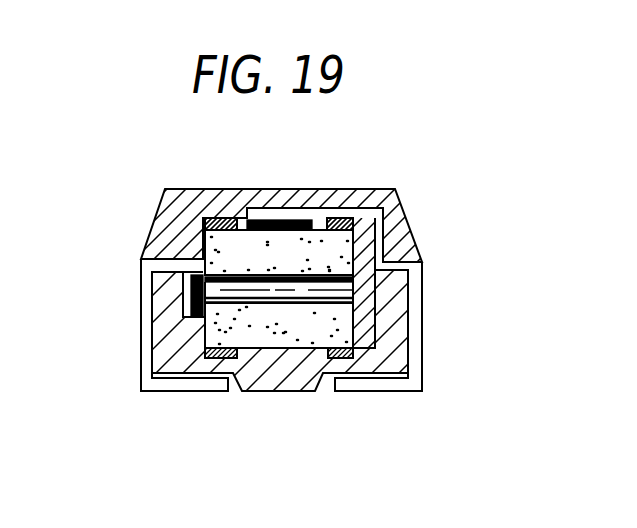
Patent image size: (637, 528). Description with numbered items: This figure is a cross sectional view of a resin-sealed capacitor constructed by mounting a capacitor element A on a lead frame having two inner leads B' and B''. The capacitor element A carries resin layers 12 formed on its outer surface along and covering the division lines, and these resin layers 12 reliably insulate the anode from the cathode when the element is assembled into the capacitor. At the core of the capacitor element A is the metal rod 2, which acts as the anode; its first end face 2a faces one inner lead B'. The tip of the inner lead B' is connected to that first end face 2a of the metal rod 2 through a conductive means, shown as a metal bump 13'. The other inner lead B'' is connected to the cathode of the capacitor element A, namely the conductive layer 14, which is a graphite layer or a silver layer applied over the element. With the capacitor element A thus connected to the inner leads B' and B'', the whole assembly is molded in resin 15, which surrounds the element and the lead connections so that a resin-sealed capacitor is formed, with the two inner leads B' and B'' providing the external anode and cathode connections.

The metal rod 2 is at (267, 290).
The first end face of the metal rod 2a is at (228, 348).
The resin layer 12 is at (340, 217).
The metal bump 13' is at (137, 285).
The conductive layer 14 is at (288, 219).
The resin 15 is at (192, 196).
The capacitor element A is at (304, 338).
The inner lead B' is at (156, 333).
The inner lead B'' is at (414, 326).